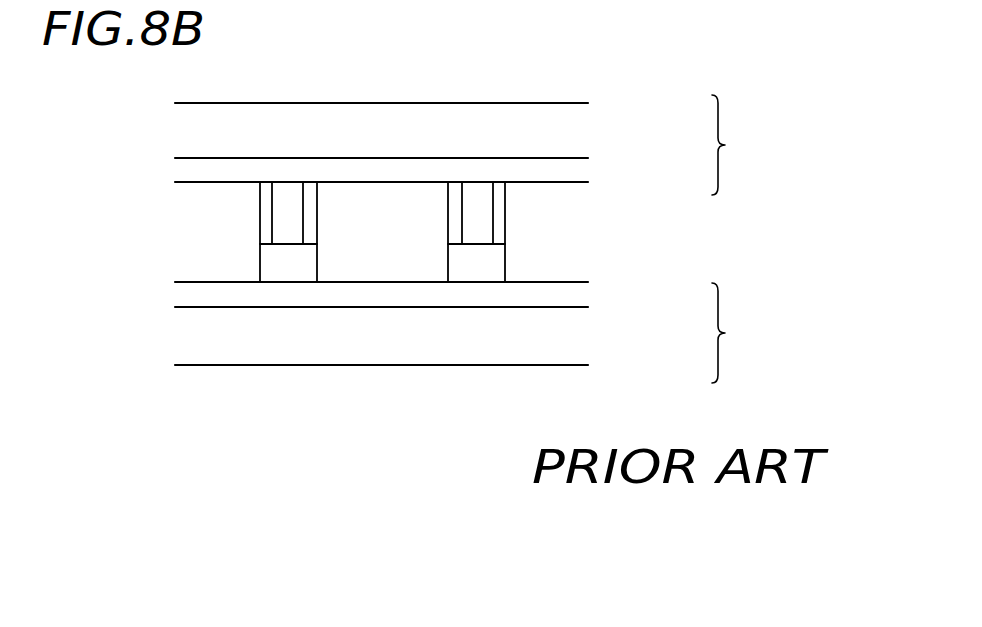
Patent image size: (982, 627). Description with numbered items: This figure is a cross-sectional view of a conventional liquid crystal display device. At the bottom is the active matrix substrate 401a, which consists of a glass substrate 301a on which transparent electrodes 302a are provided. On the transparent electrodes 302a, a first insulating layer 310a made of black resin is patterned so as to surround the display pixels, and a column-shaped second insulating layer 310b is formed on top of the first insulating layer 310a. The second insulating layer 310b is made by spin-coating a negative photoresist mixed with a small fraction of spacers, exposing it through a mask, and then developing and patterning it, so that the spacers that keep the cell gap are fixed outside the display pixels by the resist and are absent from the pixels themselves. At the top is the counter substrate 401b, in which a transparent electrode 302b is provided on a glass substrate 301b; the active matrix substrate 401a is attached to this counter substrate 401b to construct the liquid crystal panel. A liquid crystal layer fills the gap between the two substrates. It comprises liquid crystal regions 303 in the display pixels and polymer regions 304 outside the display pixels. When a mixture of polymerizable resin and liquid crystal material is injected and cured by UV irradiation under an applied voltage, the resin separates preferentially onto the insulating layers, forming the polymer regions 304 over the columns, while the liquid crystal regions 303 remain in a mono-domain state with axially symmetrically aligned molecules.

The glass substrate 301b is at (539, 130).
The transparent electrode 302b is at (565, 172).
The counter substrate 401b is at (754, 145).
The polymer regions 304 is at (507, 203).
The second insulating layer 310b is at (482, 227).
The first insulating layer 310a is at (275, 270).
The liquid crystal regions 303 is at (403, 263).
The transparent electrodes 302a is at (562, 294).
The glass substrate 301a is at (562, 338).
The active matrix substrate 401a is at (754, 333).